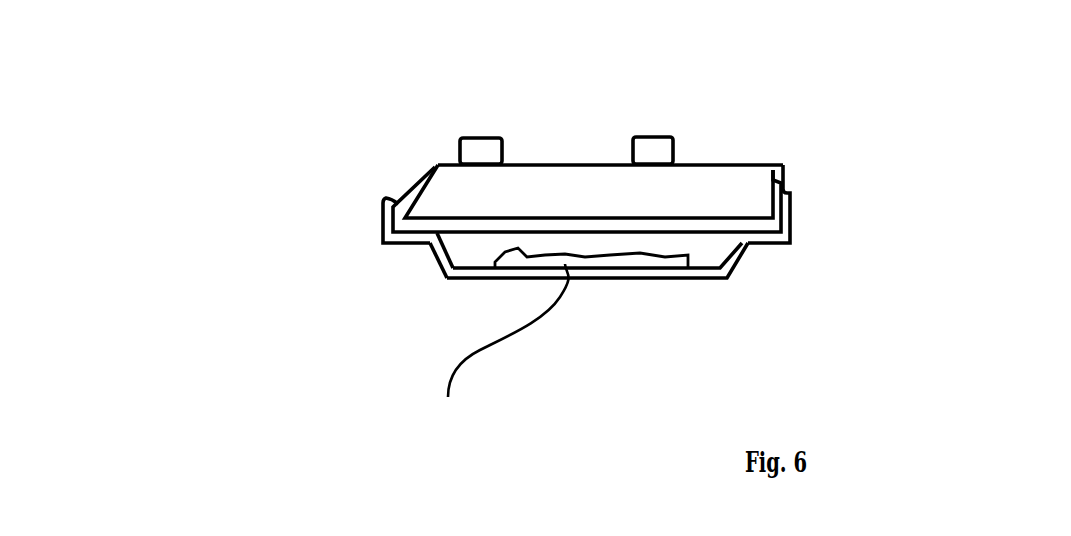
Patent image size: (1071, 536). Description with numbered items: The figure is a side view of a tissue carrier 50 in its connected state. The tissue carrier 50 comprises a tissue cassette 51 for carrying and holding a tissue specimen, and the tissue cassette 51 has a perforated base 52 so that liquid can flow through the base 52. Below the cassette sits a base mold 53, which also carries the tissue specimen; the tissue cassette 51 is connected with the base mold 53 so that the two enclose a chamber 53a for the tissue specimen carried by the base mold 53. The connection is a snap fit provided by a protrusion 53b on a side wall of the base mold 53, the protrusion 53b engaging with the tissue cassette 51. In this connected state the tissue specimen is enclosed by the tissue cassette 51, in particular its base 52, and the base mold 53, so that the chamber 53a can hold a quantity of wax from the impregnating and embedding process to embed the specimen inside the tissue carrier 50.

The tissue carrier 50 is at (176, 102).
The tissue cassette 51 is at (692, 185).
The perforated base 52 is at (578, 218).
The base mold 53 is at (740, 257).
The chamber 53a is at (463, 252).
The protrusion 53b is at (480, 152).